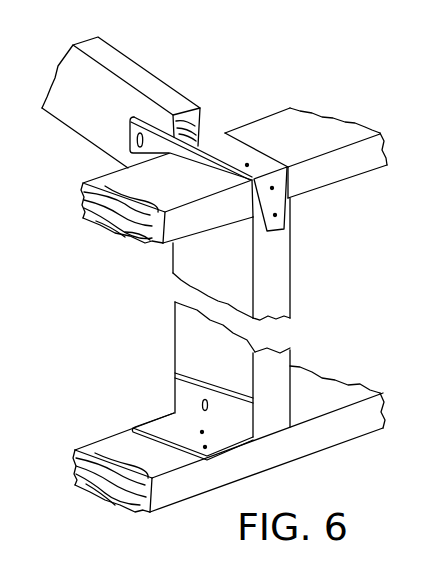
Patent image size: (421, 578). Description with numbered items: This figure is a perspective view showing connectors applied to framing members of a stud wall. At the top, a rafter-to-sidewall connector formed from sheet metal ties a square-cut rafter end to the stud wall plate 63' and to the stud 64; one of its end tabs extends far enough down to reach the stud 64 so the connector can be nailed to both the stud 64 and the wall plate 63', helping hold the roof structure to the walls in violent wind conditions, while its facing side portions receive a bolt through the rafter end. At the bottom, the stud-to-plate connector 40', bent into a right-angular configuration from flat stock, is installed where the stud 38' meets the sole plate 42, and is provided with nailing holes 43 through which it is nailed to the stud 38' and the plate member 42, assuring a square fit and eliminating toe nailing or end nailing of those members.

The stud wall plate 63' is at (322, 158).
The stud 64 is at (281, 253).
The stud 38' is at (212, 369).
The stud-to-plate connector 40' is at (189, 406).
The nailing holes 43 is at (167, 428).
The sole plate 42 is at (313, 447).